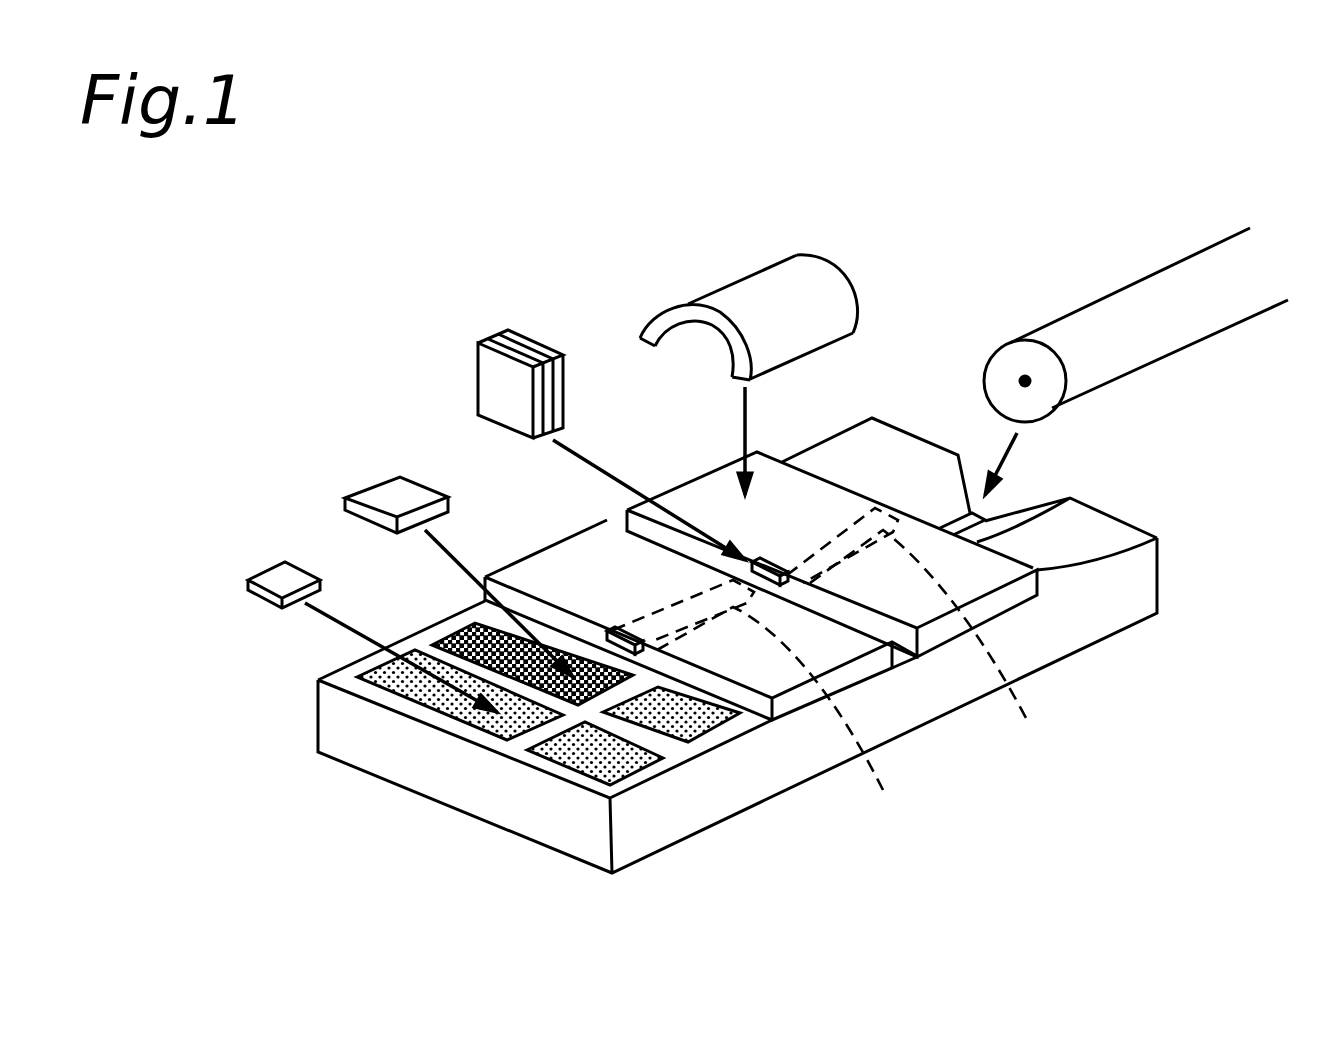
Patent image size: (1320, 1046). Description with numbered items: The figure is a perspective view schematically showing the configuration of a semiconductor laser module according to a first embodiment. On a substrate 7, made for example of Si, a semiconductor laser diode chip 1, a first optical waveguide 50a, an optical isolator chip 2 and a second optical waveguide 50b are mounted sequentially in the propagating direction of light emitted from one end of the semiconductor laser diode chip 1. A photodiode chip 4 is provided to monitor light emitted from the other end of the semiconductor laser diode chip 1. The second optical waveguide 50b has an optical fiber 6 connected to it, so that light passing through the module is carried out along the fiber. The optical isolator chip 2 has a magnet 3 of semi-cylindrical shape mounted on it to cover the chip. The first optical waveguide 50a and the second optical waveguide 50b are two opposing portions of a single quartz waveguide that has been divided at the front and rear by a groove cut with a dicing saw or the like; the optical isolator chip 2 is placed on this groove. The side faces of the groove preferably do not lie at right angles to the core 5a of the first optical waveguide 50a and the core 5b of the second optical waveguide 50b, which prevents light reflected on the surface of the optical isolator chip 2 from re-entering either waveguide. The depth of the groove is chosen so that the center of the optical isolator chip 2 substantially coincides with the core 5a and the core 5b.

The semiconductor laser diode chip 1 is at (391, 496).
The optical isolator chip 2 is at (508, 373).
The magnet 3 is at (757, 293).
The photodiode chip 4 is at (276, 578).
The core of the first optical waveguide 5a is at (796, 713).
The core of the second optical waveguide 5b is at (947, 639).
The optical fiber 6 is at (1118, 313).
The substrate 7 is at (813, 753).
The first optical waveguide 50a is at (830, 640).
The second optical waveguide 50b is at (1005, 560).